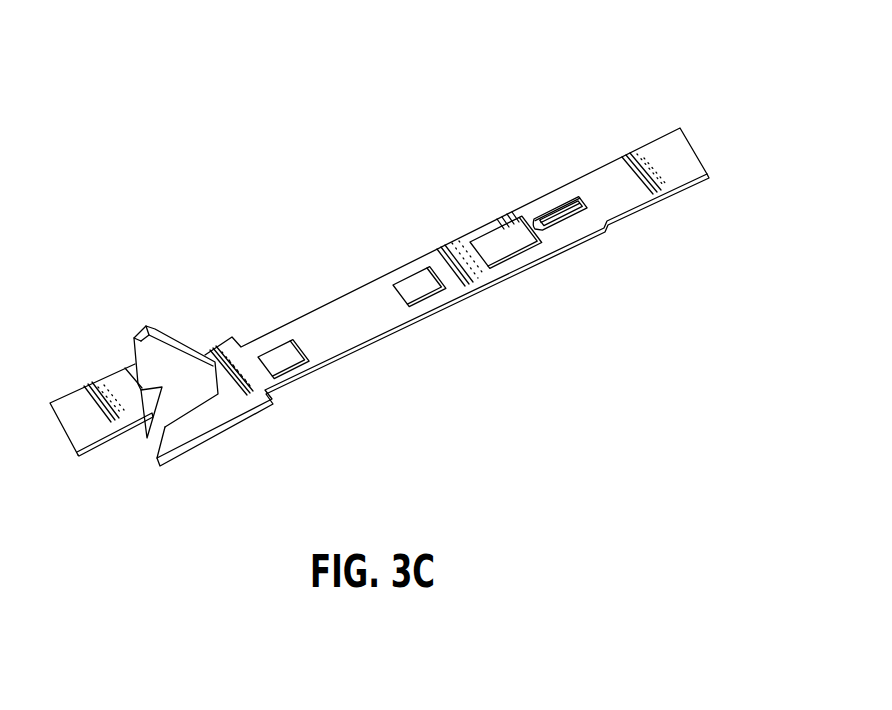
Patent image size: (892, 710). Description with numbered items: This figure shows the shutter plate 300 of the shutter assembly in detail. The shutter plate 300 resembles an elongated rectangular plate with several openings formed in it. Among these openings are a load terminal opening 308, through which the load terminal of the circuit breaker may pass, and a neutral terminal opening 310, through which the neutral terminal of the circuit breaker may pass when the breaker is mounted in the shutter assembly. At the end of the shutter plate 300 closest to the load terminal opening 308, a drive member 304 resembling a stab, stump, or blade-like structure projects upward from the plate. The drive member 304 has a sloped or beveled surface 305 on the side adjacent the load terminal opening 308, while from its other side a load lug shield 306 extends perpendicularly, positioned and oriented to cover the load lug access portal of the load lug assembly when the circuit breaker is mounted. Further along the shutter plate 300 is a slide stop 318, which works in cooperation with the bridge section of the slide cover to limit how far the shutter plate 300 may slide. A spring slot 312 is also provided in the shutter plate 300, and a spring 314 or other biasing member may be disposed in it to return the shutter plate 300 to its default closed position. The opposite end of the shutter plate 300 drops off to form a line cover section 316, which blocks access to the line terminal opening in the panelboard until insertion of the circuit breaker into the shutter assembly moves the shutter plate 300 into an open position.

The shutter plate 300 is at (369, 337).
The drive member 304 is at (145, 326).
The sloped or beveled surface 305 is at (182, 342).
The load lug shield 306 is at (113, 383).
The load terminal opening 308 is at (280, 352).
The neutral terminal opening 310 is at (416, 294).
The spring slot 312 is at (543, 207).
The spring 314 is at (570, 206).
The line cover section 316 is at (673, 162).
The slide stop 318 is at (488, 243).